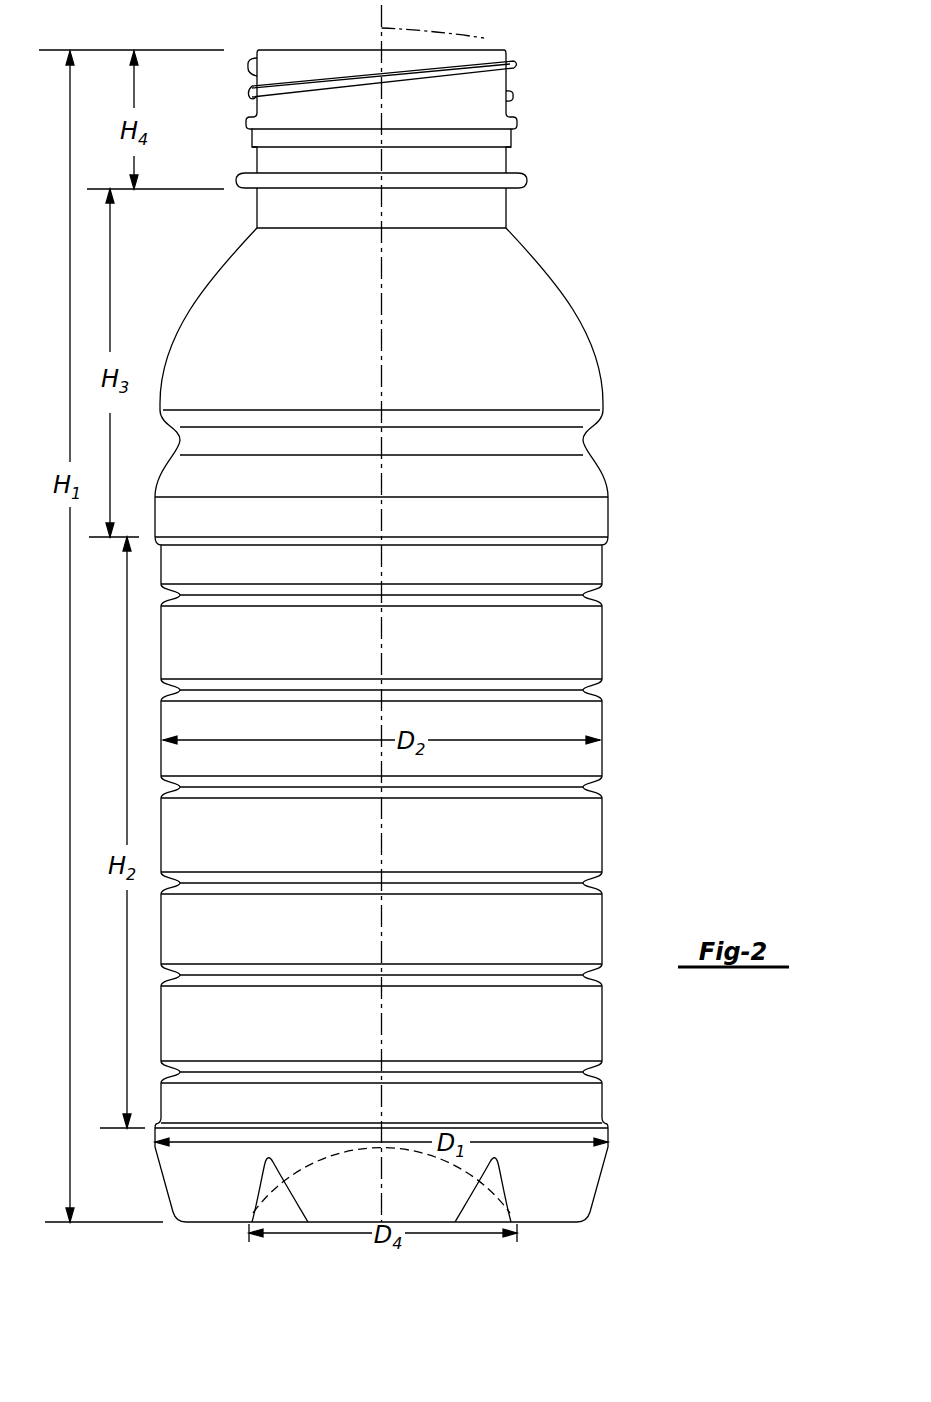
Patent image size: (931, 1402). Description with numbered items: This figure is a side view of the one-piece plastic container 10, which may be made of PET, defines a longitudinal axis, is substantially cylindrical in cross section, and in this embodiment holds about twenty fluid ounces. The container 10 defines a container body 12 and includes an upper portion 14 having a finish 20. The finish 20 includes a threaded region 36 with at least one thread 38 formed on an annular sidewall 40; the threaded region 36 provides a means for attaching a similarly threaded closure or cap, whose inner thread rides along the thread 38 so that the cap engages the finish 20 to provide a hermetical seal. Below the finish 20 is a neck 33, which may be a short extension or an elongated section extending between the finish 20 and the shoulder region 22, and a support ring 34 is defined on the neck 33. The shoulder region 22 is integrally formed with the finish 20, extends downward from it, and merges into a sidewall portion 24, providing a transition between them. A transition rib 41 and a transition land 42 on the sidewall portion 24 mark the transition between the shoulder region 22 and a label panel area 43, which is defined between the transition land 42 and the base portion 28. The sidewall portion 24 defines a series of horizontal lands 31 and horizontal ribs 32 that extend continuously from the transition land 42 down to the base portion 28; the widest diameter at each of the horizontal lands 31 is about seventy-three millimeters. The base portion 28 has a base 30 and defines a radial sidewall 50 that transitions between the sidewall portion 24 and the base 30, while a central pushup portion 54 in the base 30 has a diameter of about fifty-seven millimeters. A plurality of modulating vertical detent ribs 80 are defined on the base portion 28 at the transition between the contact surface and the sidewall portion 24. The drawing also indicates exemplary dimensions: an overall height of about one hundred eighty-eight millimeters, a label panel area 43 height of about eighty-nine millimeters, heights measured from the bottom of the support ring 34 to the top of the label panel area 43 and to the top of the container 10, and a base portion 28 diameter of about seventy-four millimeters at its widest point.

The one-piece plastic container 10 is at (717, 125).
The container body 12 is at (673, 401).
The upper portion 14 is at (547, 136).
The finish 20 is at (556, 116).
The shoulder region 22 is at (545, 255).
The sidewall portion 24 is at (606, 741).
The base portion 28 is at (616, 1147).
The base 30 is at (560, 1222).
The horizontal lands 31 is at (593, 847).
The horizontal ribs 32 is at (577, 691).
The neck 33 is at (353, 220).
The support ring 34 is at (524, 178).
The threaded region 36 is at (238, 110).
The thread 38 is at (281, 92).
The annular sidewall 40 is at (310, 68).
The transition rib 41 is at (563, 441).
The transition land 42 is at (605, 520).
The label panel area 43 is at (696, 837).
The radial sidewall 50 is at (587, 1175).
The central pushup portion 54 is at (405, 1145).
The modulating vertical detent ribs 80 is at (270, 1182).